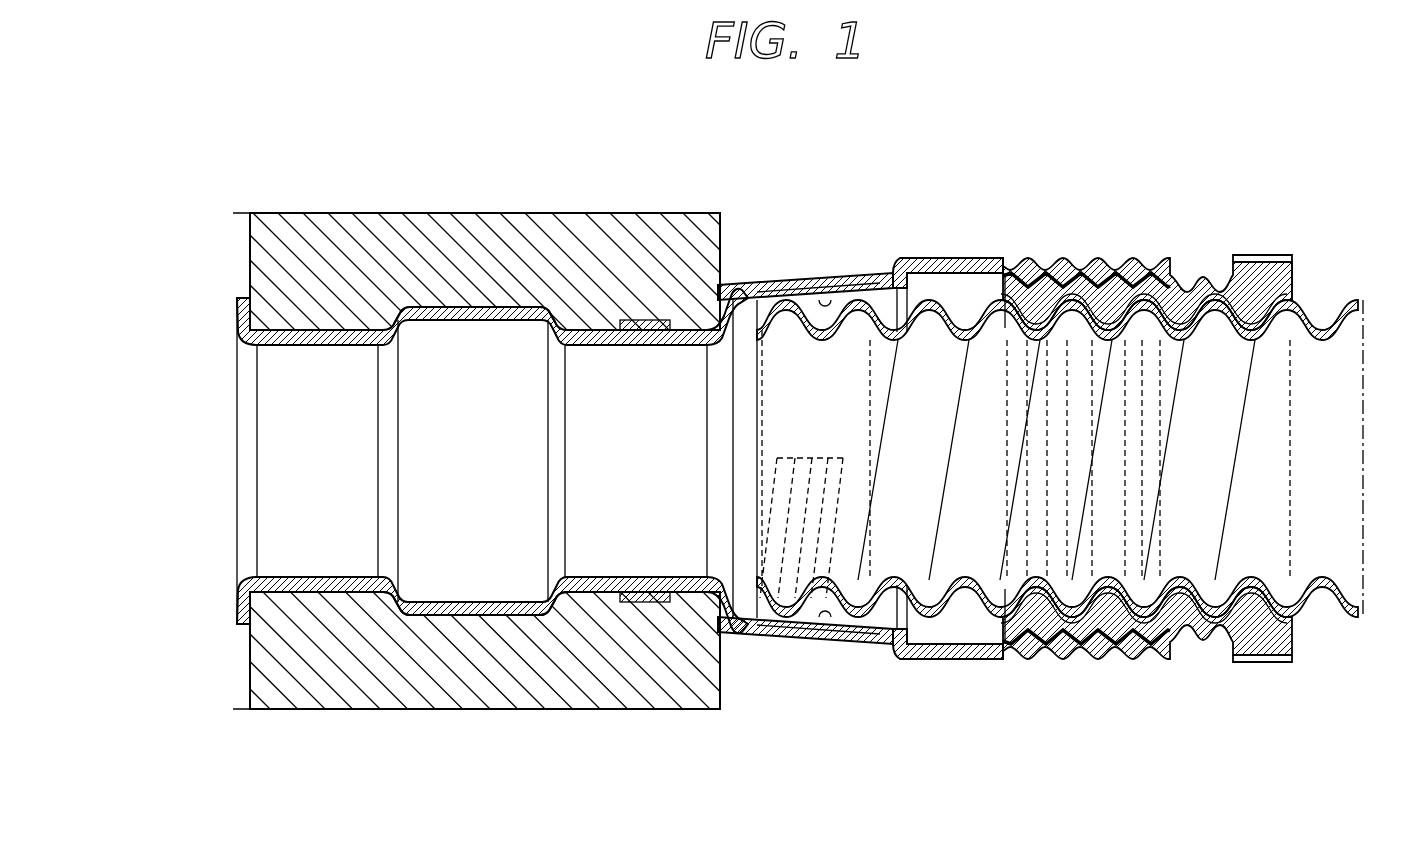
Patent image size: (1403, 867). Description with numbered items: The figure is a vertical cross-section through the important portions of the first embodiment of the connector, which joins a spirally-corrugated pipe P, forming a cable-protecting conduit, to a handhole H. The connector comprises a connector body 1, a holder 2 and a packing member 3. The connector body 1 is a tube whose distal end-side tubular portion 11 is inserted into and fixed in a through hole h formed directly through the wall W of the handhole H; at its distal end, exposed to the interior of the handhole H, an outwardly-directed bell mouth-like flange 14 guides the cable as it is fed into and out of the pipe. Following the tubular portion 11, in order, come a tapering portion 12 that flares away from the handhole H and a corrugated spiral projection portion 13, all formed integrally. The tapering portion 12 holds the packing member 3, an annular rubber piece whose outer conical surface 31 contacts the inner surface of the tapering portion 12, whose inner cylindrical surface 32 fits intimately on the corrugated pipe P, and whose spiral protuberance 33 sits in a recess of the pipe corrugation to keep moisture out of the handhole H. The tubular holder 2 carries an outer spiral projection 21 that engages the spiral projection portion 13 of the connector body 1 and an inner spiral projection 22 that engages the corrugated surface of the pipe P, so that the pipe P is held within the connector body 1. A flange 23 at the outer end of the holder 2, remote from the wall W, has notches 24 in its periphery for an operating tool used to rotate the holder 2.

The connector body 1 is at (1050, 461).
The distal end-side tubular portion 11 is at (455, 617).
The tapering portion 12 is at (875, 640).
The corrugated spiral projection portion 13 is at (1068, 634).
The bell mouth-like flange 14 is at (237, 608).
The holder 2 is at (1191, 461).
The spiral projection 21 is at (1038, 258).
The spiral projection 22 is at (1113, 258).
The flange 23 is at (1292, 262).
The notches 24 is at (1267, 253).
The packing member 3 is at (805, 463).
The conical surface 31 is at (757, 283).
The cylindrical surface 32 is at (825, 283).
The spiral protuberance 33 is at (782, 640).
The handhole H is at (190, 210).
The wall W is at (430, 232).
The through hole h is at (252, 280).
The pipe P is at (1322, 614).